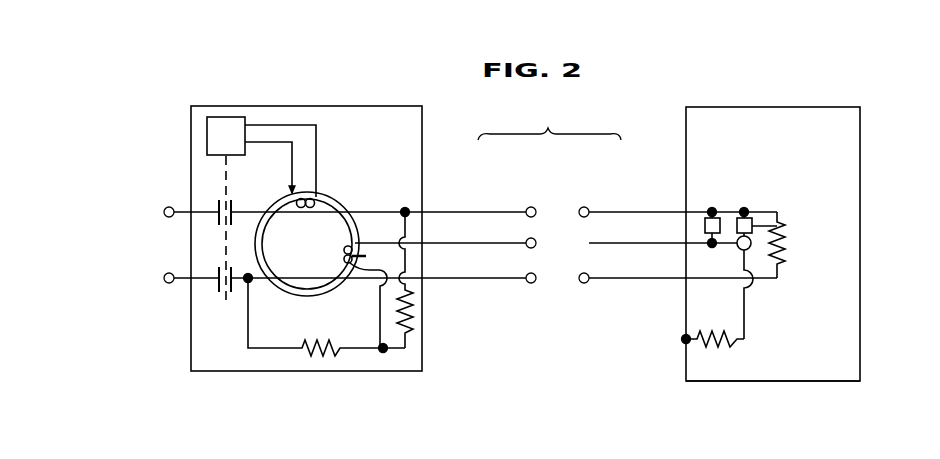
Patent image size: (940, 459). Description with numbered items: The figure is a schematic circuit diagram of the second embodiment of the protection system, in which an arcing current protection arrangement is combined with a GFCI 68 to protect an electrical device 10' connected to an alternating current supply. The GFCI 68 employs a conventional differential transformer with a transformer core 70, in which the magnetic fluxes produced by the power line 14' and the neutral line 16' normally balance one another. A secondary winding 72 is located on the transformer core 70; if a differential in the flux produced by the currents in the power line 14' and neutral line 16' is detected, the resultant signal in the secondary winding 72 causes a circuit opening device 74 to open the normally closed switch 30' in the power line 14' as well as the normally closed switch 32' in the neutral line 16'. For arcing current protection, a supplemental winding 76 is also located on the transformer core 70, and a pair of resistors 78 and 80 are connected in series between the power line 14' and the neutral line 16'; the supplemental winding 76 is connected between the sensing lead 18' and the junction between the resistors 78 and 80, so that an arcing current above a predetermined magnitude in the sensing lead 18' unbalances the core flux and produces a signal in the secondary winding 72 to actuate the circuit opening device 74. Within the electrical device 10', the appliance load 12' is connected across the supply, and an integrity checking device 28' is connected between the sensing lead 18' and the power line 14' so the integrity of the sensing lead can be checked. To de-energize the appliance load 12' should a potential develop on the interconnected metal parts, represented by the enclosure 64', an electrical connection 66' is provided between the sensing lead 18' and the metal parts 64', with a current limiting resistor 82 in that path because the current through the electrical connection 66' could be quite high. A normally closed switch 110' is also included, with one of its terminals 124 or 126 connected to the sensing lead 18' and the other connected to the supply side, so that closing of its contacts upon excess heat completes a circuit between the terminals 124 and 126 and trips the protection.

The GFCI 68 is at (318, 106).
The circuit opening device 74 is at (232, 117).
The normally closed switch 30' is at (190, 223).
The normally closed switch 32' is at (188, 304).
The power line 14' is at (451, 185).
The neutral line 16' is at (461, 295).
The sensing lead 18' is at (482, 230).
The transformer core 70 is at (340, 205).
The secondary winding 72 is at (303, 190).
The supplemental winding 76 is at (345, 262).
The resistor 78 is at (322, 355).
The resistor 80 is at (410, 312).
The electrical device 10' is at (797, 244).
The terminal 124 is at (710, 207).
The normally closed switch 110' is at (684, 189).
The integrity checking device 28' is at (776, 196).
The terminal 126 is at (712, 247).
The appliance load 12' is at (810, 245).
The electrical connection 66' is at (764, 287).
The current limiting resistor 82 is at (718, 348).
The enclosure 64' is at (749, 382).